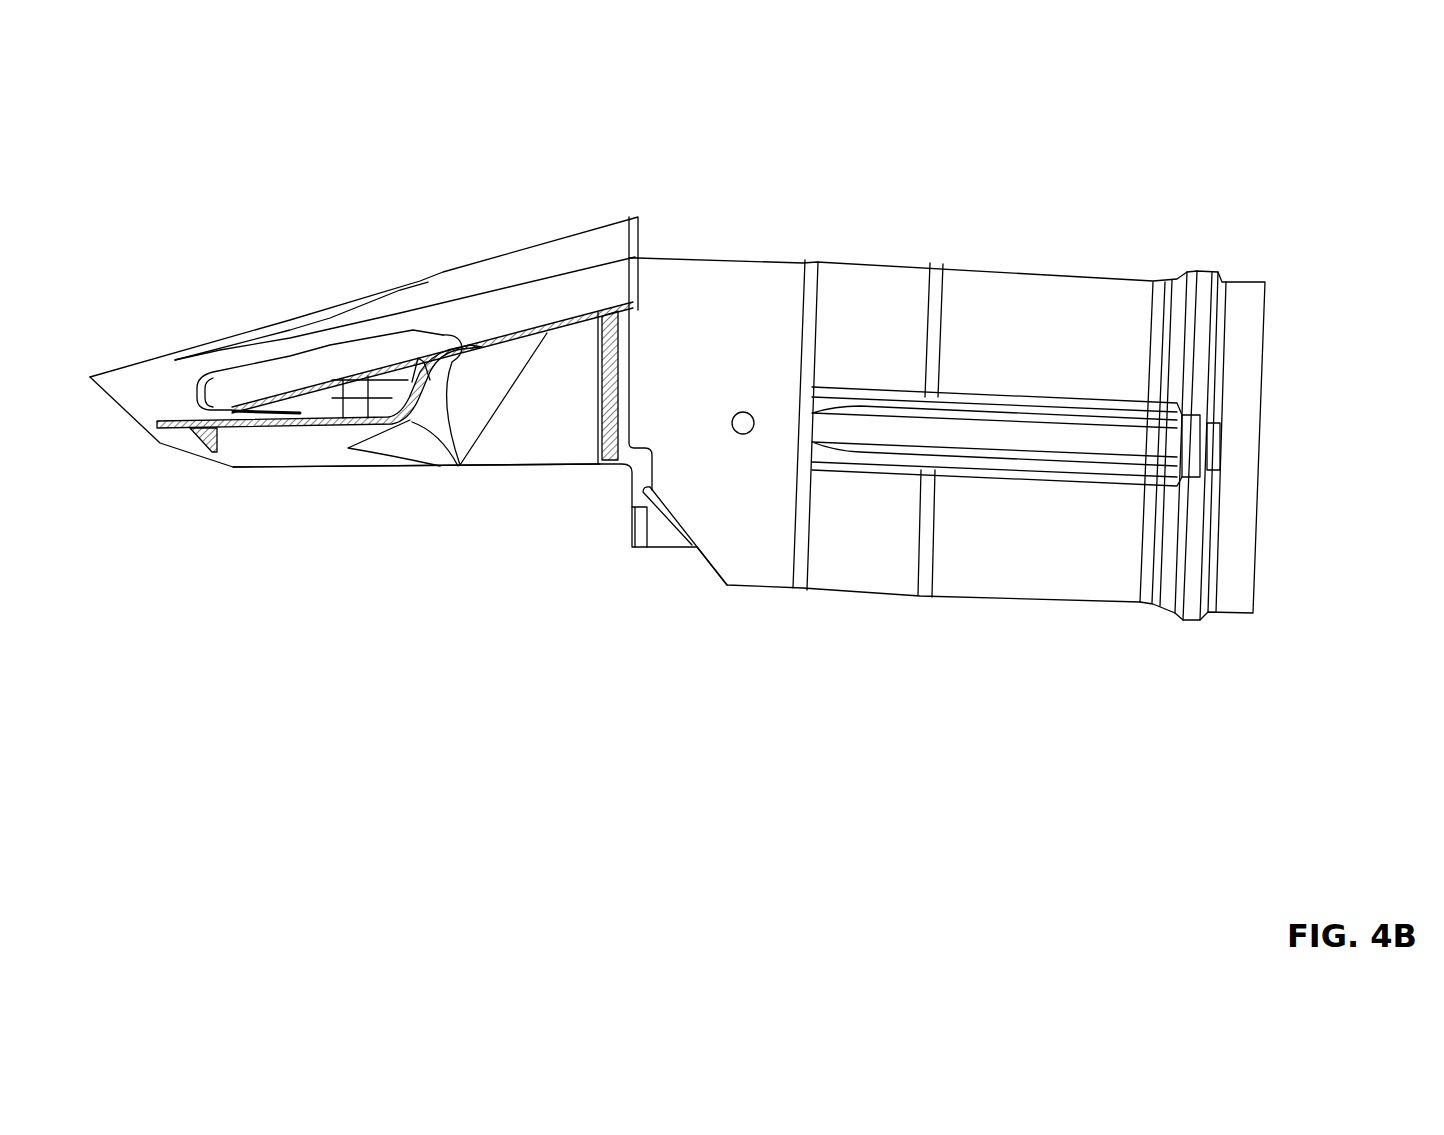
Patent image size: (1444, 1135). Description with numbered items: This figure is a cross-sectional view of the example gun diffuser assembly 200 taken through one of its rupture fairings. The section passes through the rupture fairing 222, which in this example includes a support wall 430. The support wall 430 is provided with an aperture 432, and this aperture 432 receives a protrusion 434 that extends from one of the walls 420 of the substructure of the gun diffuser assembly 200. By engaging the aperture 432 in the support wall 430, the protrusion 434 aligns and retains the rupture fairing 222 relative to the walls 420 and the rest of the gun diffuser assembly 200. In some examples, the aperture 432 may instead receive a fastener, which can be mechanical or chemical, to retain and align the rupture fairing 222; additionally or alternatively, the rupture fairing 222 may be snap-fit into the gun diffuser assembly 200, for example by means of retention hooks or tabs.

The gun diffuser assembly 200 is at (1151, 67).
The rupture fairing 222 is at (383, 352).
The walls 420 is at (300, 443).
The support wall 430 is at (277, 420).
The aperture 432 is at (205, 432).
The protrusion 434 is at (236, 410).